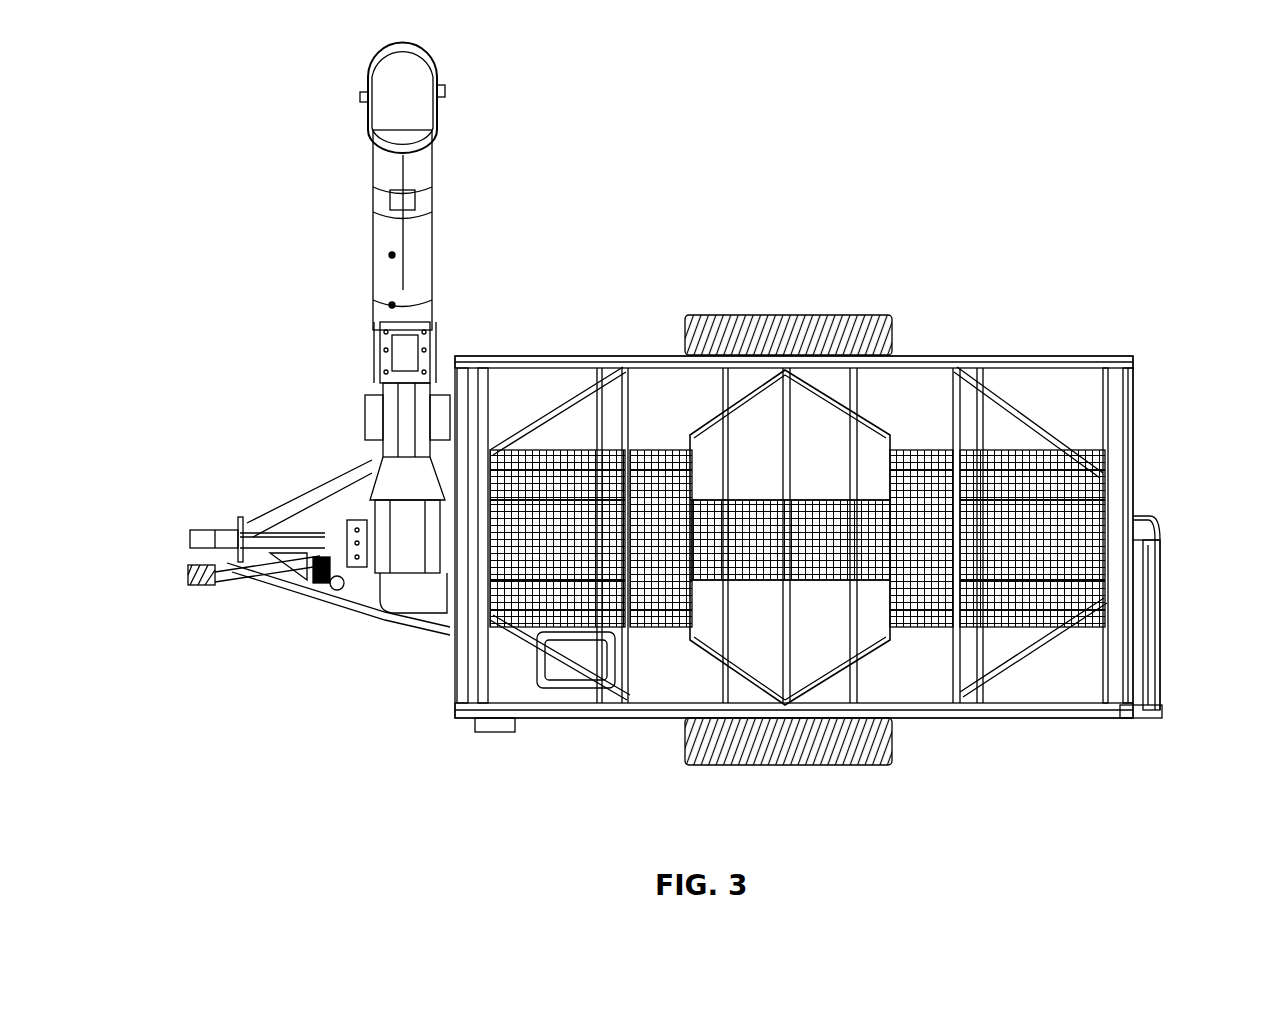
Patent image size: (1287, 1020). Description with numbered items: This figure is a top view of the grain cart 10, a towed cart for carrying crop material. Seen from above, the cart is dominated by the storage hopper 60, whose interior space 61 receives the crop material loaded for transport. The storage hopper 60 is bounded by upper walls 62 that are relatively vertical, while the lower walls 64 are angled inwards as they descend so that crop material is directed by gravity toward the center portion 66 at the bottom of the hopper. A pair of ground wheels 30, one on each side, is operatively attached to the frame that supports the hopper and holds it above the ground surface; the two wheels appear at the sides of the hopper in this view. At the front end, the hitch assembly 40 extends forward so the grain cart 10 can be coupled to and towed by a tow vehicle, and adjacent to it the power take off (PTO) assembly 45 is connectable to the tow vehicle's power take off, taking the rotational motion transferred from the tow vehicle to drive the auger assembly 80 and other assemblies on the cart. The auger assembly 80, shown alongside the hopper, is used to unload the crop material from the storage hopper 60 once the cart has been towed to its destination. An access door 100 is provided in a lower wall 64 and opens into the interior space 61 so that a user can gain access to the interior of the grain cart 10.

The grain cart 10 is at (1122, 152).
The ground wheels 30 is at (778, 320).
The hitch assembly 40 is at (205, 533).
The power take off (PTO) assembly 45 is at (222, 575).
The storage hopper 60 is at (990, 357).
The interior space 61 is at (908, 408).
The upper walls 62 is at (1067, 357).
The lower walls 64 is at (660, 410).
The center portion 66 is at (1030, 530).
The auger assembly 80 is at (380, 230).
The access door 100 is at (587, 655).